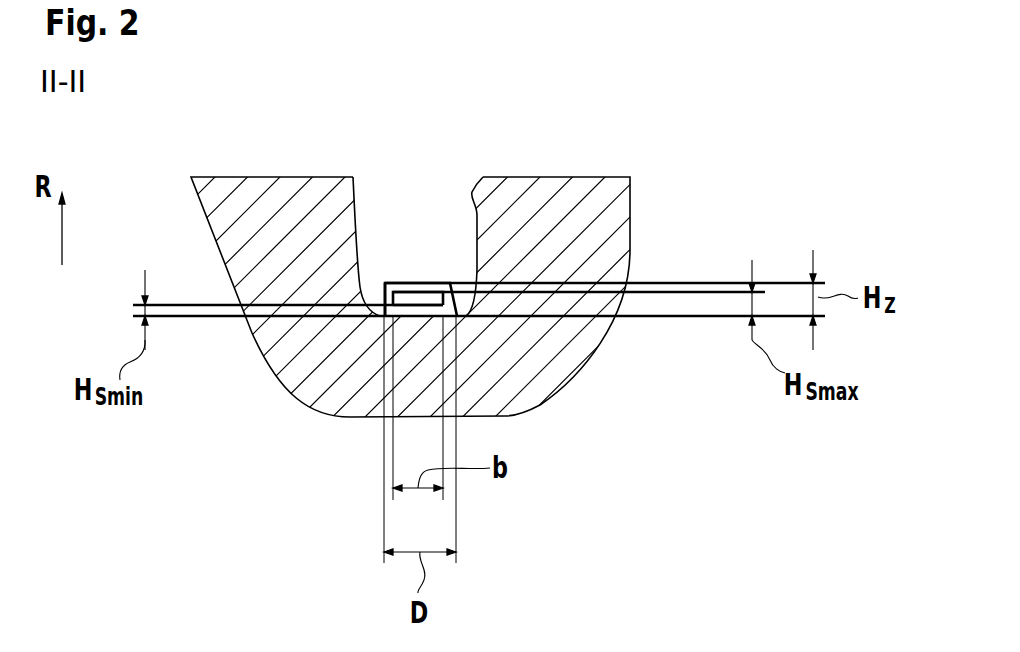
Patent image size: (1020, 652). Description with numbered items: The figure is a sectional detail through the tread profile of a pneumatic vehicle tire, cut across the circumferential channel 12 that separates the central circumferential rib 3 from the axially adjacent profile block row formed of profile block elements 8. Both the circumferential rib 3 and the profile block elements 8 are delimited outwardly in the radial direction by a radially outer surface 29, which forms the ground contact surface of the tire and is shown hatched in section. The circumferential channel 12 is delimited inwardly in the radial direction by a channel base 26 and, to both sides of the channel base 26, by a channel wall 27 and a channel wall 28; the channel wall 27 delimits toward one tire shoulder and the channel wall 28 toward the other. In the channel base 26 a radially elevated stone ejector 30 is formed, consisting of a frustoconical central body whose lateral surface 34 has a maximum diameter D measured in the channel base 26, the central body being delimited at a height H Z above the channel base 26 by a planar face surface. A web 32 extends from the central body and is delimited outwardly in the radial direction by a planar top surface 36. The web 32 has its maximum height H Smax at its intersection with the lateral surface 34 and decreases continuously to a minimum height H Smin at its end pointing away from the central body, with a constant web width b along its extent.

The circumferential rib 3 is at (247, 218).
The profile block elements 8 is at (590, 216).
The circumferential channel 12 is at (418, 233).
The channel base 26 is at (468, 308).
The channel wall 27 is at (358, 217).
The channel wall 28 is at (478, 178).
The radially outer surface 29 is at (295, 179).
The stone ejector 30 is at (382, 270).
The web 32 is at (413, 306).
The lateral surface 34 is at (380, 292).
The planar top surface 36 is at (404, 288).